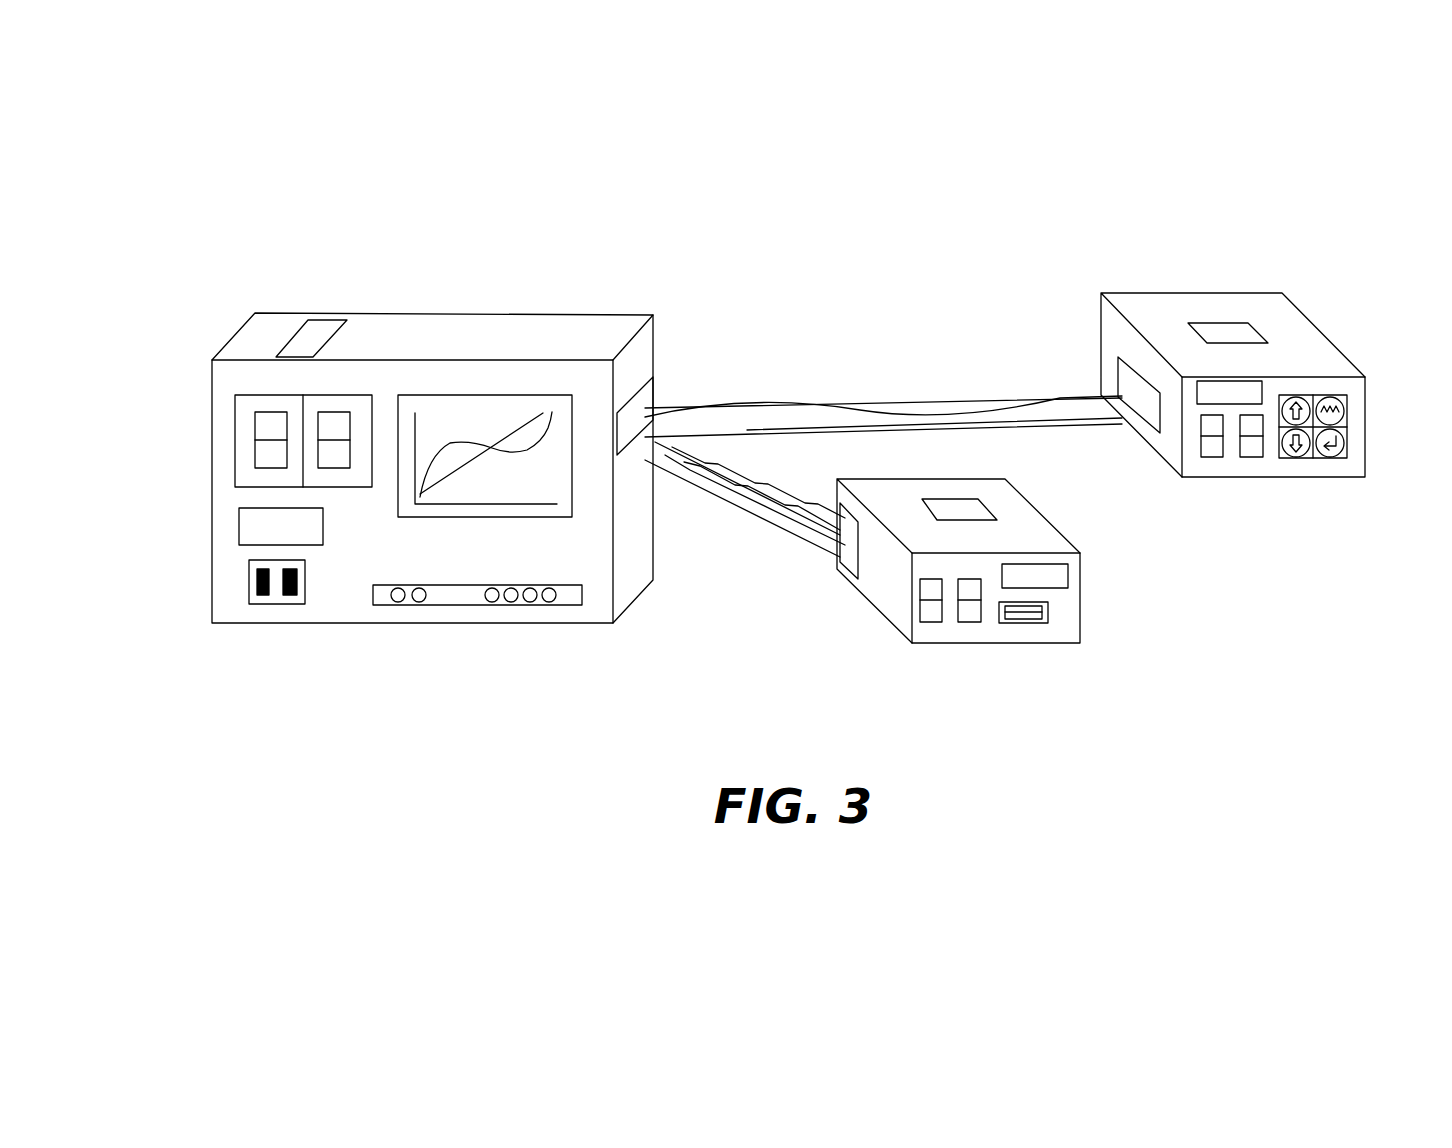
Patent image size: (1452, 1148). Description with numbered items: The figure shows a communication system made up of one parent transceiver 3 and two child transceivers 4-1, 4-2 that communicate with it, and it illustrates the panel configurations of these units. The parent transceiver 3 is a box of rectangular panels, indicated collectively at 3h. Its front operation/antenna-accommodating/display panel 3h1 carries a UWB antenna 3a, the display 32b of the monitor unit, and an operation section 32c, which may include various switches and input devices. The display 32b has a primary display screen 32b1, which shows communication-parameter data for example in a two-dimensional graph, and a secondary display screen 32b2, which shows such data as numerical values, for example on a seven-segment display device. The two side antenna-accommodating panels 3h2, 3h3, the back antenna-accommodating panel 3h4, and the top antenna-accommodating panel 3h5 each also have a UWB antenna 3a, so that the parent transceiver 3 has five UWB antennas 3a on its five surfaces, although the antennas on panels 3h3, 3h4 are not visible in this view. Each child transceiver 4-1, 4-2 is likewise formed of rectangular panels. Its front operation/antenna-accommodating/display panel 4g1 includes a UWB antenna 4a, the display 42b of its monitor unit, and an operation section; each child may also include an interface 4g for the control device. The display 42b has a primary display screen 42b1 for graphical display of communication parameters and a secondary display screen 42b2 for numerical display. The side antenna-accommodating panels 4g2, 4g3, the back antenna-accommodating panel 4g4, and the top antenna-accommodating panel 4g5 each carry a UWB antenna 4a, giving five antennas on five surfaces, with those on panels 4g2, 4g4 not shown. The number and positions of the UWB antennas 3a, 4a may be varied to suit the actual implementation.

The parent transceiver 3 is at (622, 330).
The UWB antenna 3a is at (312, 335).
The housing 3h is at (200, 492).
The front operation/antenna-accommodating/display panel 3h1 is at (237, 582).
The side antenna-accommodating panel 3h2 is at (630, 575).
The side antenna-accommodating panel 3h3 is at (212, 410).
The back antenna-accommodating panel 3h4 is at (620, 330).
The top antenna-accommodating panel 3h5 is at (262, 338).
The display 32b is at (355, 262).
The primary display screen 32b1 is at (490, 395).
The secondary display screen 32b2 is at (350, 400).
The operation section 32c is at (456, 607).
The child transceiver 4-1 is at (880, 630).
The child transceiver 4-2 is at (1300, 318).
The UWB antenna 4a is at (972, 498).
The interface 4g is at (1352, 400).
The front operation/antenna-accommodating/display panel 4g1 is at (1068, 608).
The side antenna-accommodating panel 4g2 is at (895, 598).
The side antenna-accommodating panel 4g3 is at (1050, 525).
The back antenna-accommodating panel 4g4 is at (912, 485).
The top antenna-accommodating panel 4g5 is at (882, 495).
The display 42b is at (863, 690).
The primary display screen 42b1 is at (1022, 626).
The secondary display screen 42b2 is at (930, 626).